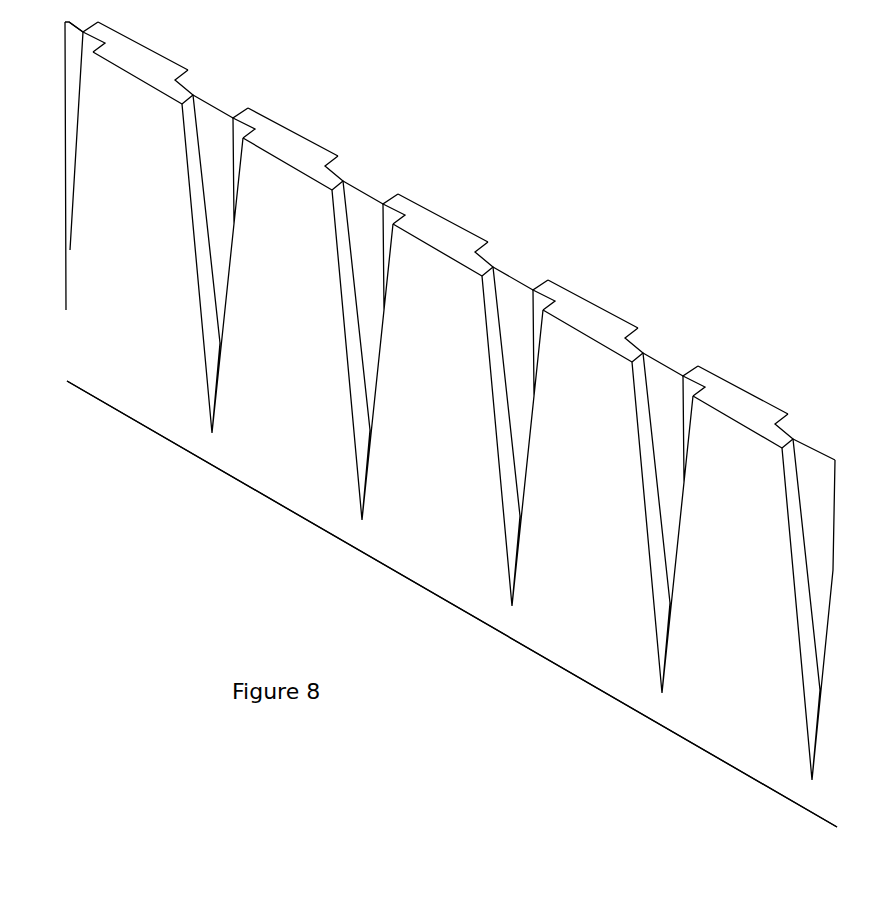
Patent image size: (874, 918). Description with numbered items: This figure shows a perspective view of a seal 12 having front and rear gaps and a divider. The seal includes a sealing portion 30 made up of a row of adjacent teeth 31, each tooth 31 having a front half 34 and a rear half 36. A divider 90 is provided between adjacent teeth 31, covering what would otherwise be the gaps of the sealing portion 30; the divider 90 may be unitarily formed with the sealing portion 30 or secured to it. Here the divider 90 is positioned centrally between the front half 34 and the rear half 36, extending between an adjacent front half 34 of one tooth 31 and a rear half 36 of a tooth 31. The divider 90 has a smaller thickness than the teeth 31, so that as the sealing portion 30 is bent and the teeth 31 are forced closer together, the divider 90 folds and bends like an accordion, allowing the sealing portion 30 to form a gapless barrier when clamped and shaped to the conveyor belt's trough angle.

The wall assembly 12 is at (689, 201).
The sealing portion 30 is at (452, 604).
The tooth 31 is at (452, 517).
The front half 34 is at (622, 351).
The rear half 36 is at (550, 282).
The divider 90 is at (508, 437).